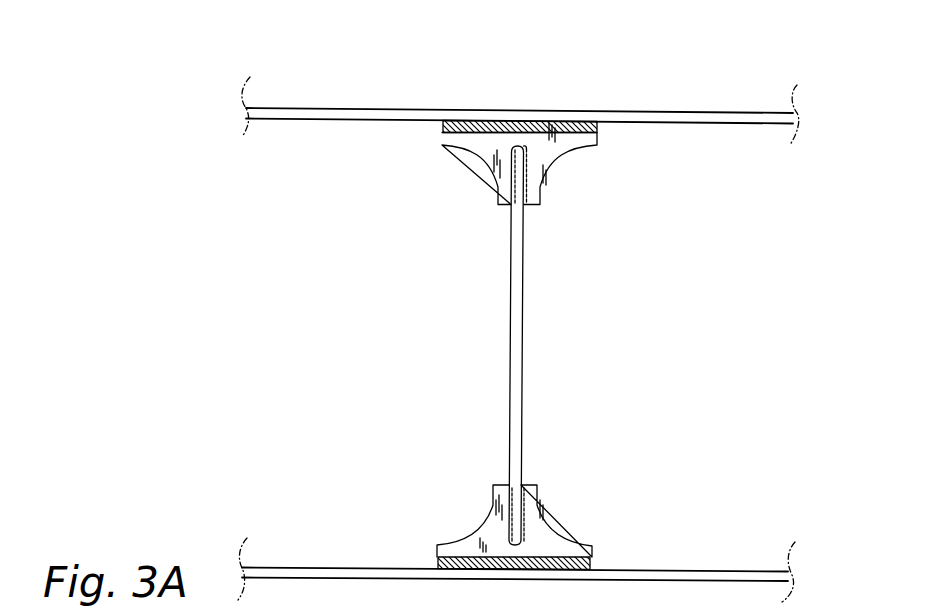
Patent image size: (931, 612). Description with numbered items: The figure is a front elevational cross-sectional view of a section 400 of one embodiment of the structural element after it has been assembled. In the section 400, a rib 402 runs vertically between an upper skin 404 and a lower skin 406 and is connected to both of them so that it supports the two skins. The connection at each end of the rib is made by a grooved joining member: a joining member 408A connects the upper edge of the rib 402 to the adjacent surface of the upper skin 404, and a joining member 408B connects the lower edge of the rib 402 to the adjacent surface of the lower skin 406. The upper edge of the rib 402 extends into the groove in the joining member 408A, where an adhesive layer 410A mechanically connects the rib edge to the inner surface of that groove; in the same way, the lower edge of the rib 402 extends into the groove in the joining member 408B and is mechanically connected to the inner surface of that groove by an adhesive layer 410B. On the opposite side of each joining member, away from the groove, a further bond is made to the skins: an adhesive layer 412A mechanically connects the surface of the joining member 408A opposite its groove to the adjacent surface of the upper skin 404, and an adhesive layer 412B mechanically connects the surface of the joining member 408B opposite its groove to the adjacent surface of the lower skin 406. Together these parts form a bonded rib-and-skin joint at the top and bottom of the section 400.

The section 400 is at (547, 91).
The rib 402 is at (512, 352).
The upper skin 404 is at (713, 112).
The lower skin 406 is at (500, 580).
The joining member 408A is at (476, 155).
The joining member 408B is at (453, 545).
The adhesive layer 410A is at (527, 207).
The adhesive layer 410B is at (524, 480).
The adhesive layer 412A is at (597, 129).
The adhesive layer 412B is at (594, 559).